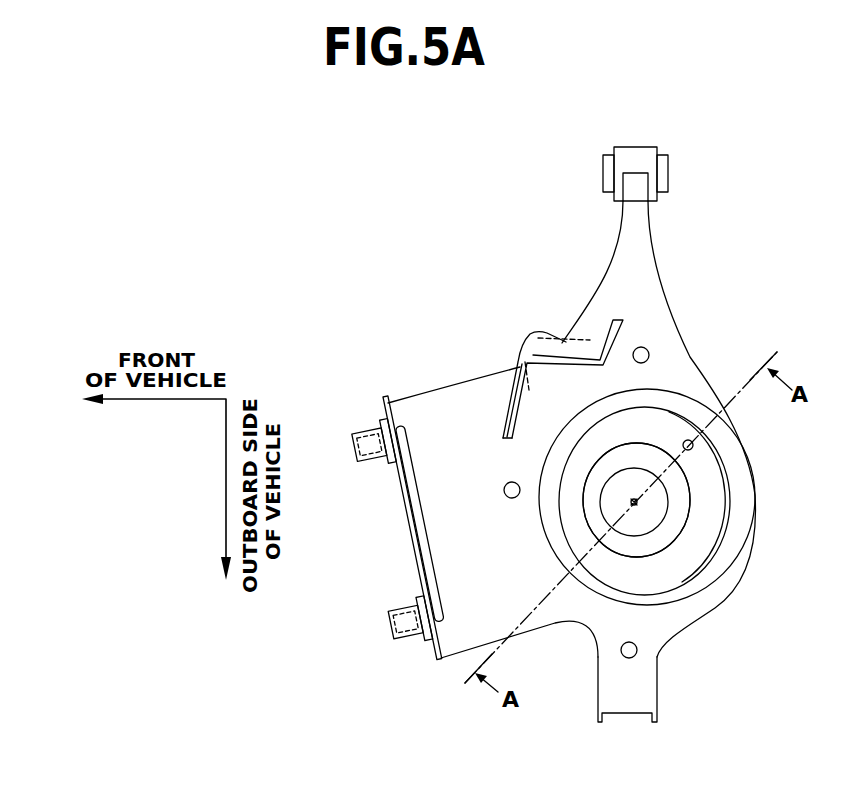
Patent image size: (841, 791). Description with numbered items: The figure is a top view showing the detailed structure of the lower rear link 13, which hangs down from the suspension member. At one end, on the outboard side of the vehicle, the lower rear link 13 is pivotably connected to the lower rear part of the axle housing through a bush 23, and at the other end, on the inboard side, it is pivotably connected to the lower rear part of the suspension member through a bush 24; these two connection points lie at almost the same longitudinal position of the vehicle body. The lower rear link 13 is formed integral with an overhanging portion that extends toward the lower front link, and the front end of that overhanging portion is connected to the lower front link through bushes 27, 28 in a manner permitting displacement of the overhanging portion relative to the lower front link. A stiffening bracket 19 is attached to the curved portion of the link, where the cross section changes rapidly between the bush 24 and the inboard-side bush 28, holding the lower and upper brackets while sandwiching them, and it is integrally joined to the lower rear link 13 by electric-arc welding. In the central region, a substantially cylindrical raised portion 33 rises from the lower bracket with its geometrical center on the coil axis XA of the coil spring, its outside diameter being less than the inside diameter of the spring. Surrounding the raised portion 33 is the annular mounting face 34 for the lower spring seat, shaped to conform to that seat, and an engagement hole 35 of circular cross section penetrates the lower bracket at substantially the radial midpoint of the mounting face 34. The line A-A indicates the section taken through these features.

The lower rear link 13 is at (552, 267).
The stiffening bracket 19 is at (527, 350).
The bush 23 is at (628, 685).
The bush 24 is at (643, 163).
The bush 27 is at (402, 612).
The bush 28 is at (363, 435).
The raised portion 33 is at (677, 520).
The mounting face 34 is at (710, 497).
The engagement hole 35 is at (689, 440).